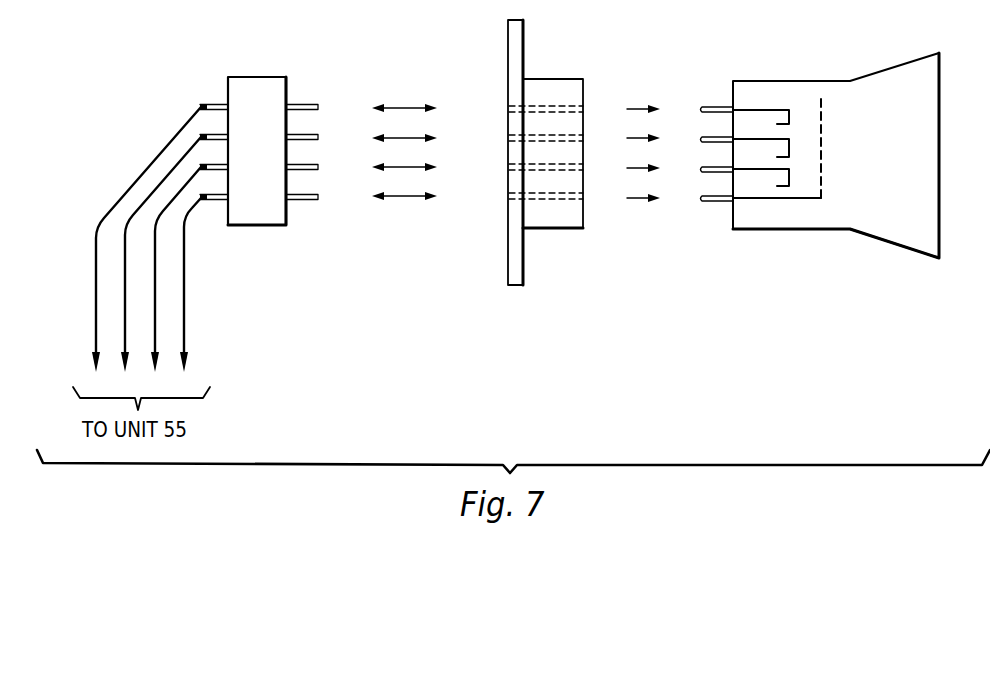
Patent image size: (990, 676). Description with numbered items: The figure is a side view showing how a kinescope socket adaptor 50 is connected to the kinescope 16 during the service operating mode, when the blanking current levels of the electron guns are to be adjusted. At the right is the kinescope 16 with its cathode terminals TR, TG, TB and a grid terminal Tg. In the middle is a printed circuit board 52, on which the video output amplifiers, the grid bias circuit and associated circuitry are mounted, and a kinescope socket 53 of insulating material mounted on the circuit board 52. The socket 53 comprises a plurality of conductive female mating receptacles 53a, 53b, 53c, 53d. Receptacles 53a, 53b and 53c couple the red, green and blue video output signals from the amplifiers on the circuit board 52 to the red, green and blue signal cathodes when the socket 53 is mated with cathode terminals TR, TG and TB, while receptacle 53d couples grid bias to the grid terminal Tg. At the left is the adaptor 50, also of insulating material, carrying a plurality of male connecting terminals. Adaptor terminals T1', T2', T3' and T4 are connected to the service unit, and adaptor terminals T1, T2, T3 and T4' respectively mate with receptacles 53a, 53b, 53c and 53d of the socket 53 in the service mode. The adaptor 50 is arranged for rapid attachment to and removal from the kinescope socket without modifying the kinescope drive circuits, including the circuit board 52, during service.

The kinescope 16 is at (877, 73).
The kinescope socket adaptor 50 is at (267, 263).
The printed circuit board 52 is at (508, 52).
The kinescope socket 53 is at (548, 79).
The mating receptacle 53a is at (560, 106).
The mating receptacle 53b is at (567, 135).
The mating receptacle 53c is at (560, 165).
The mating receptacle 53d is at (557, 195).
The adaptor terminal T1 is at (274, 96).
The adaptor terminal T2 is at (275, 136).
The adaptor terminal T3 is at (277, 173).
The adaptor terminal T4 is at (212, 225).
The adaptor terminal T1' is at (198, 84).
The adaptor terminal T2' is at (171, 122).
The adaptor terminal T3' is at (155, 159).
The adaptor terminal T4' is at (321, 206).
The kinescope cathode terminal TR is at (708, 106).
The kinescope cathode terminal TG is at (708, 136).
The kinescope cathode terminal TB is at (708, 166).
The grid terminal Tg is at (708, 196).